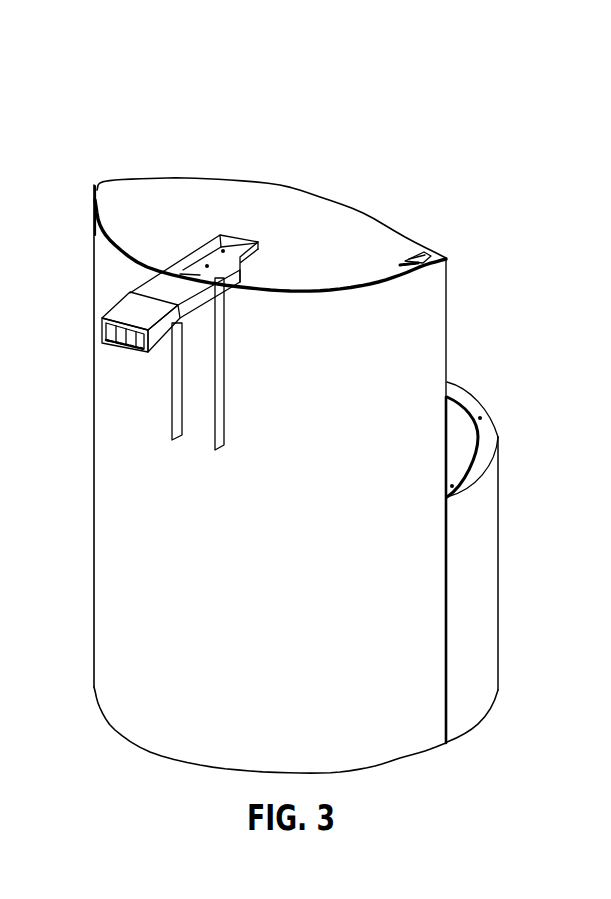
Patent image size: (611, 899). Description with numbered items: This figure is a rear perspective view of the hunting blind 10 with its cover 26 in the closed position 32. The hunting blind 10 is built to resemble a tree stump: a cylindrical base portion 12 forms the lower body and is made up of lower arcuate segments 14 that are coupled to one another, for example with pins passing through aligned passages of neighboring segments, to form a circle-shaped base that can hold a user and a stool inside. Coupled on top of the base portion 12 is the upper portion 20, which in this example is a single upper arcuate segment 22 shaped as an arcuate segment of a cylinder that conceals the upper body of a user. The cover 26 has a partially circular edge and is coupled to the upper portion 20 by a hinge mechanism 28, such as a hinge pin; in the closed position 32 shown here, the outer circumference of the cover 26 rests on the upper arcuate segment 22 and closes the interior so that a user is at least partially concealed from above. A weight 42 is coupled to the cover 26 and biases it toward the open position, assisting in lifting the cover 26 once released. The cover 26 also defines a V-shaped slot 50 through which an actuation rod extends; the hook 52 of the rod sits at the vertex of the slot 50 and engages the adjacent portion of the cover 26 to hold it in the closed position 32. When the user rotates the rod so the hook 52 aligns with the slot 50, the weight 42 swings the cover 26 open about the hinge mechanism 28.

The hunting blind 10 is at (186, 112).
The base portion 12 is at (472, 535).
The lower arcuate segments 14 is at (472, 638).
The upper portion 20 is at (423, 302).
The upper arcuate segment 22 is at (423, 358).
The cover 26 is at (290, 200).
The hinge mechanism 28 is at (222, 250).
The closed position 32 is at (249, 148).
The weight 42 is at (123, 312).
The slot 50 is at (402, 262).
The hook 52 is at (409, 252).